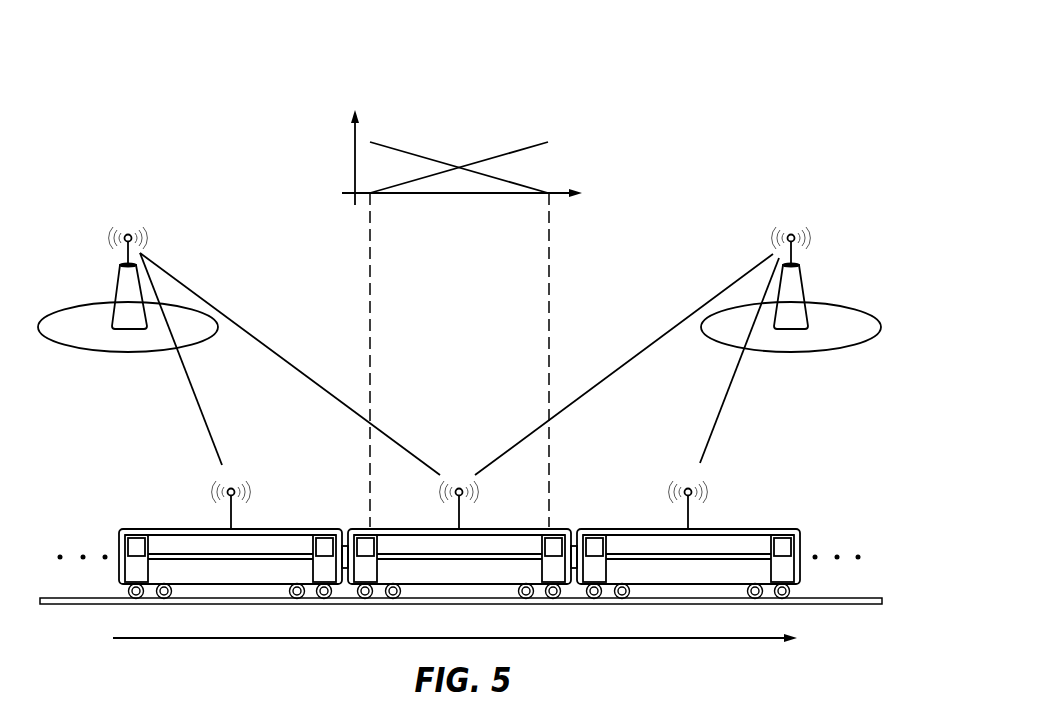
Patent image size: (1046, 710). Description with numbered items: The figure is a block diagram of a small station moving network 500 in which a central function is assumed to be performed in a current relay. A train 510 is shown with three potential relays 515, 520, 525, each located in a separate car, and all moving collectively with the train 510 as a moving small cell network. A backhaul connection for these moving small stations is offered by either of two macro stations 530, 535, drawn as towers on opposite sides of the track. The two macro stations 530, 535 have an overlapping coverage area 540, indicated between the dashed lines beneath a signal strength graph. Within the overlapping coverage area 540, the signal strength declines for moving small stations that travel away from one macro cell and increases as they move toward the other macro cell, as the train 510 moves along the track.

The network 500 is at (752, 106).
The train 510 is at (742, 529).
The first potential relay R1 515 is at (228, 507).
The second potential relay R2 520 is at (456, 507).
The third potential relay R3 525 is at (685, 507).
The first macro station 530 is at (115, 283).
The second macro station 535 is at (805, 289).
The overlapping coverage area 540 is at (550, 325).